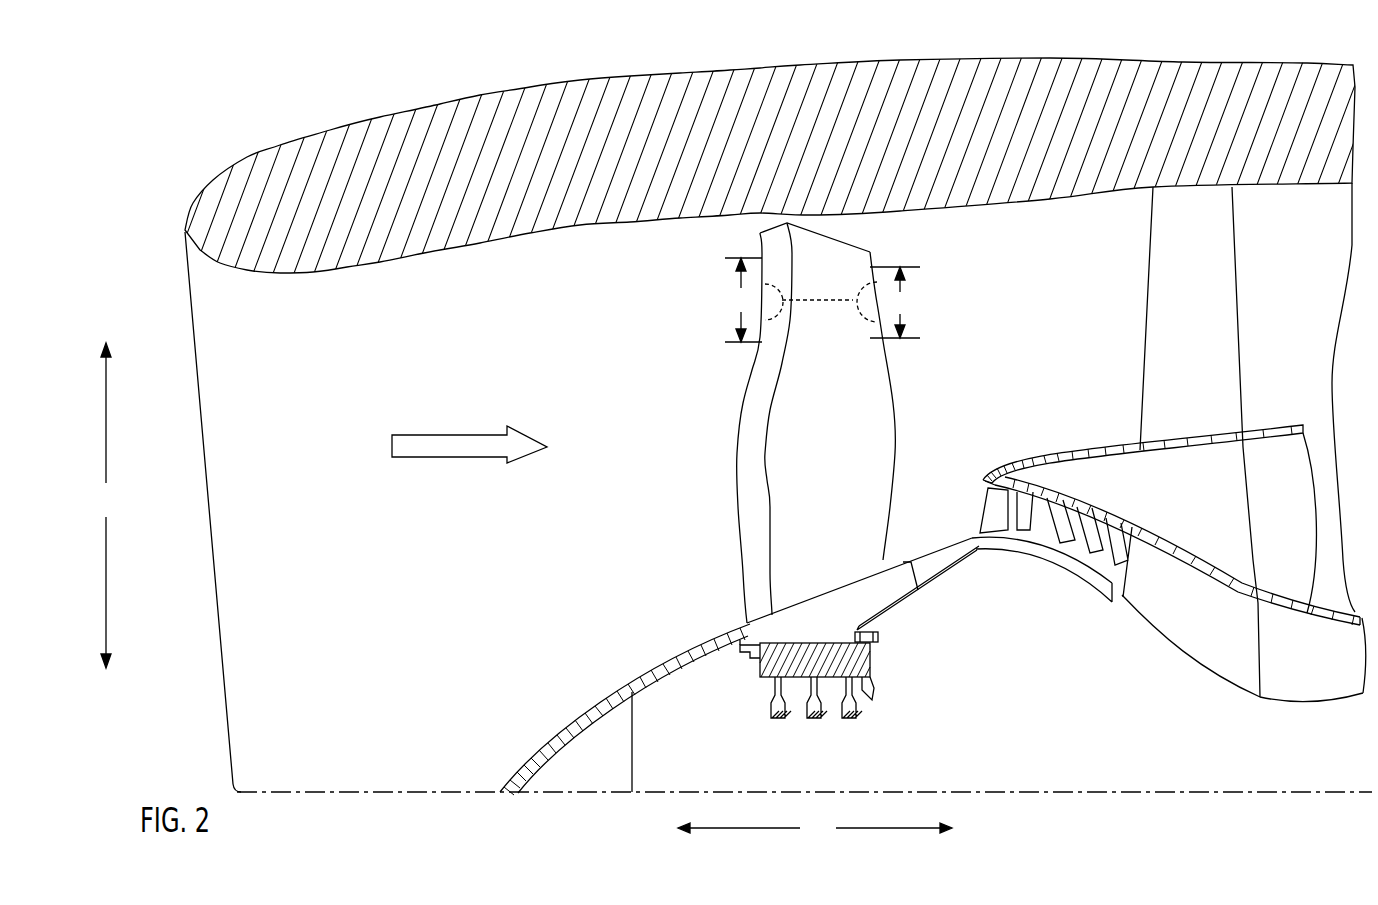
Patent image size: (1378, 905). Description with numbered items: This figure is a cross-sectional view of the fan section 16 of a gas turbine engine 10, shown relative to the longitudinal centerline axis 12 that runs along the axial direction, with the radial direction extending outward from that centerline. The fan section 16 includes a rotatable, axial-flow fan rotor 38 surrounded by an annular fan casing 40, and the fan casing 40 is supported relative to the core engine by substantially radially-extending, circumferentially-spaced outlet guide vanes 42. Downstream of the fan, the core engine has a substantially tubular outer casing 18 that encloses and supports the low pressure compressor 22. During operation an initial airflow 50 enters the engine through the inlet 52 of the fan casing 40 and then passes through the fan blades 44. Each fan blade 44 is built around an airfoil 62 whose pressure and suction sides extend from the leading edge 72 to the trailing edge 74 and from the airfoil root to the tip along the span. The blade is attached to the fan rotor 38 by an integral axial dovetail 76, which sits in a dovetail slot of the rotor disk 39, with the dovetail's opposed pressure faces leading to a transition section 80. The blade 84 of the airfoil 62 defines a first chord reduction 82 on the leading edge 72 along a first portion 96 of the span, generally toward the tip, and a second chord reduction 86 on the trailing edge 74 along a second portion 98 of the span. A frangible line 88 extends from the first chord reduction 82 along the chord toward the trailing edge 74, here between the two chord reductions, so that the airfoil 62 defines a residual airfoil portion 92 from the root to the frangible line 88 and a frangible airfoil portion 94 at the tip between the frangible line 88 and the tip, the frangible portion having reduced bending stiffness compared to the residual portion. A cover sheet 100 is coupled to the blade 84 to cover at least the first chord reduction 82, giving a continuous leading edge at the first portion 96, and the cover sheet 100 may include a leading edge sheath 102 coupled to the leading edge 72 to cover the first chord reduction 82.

The gas turbine engine 10 is at (266, 135).
The centerline axis 12 is at (718, 790).
The fan section 16 is at (795, 325).
The outer casing 18 is at (1102, 450).
The low pressure compressor 22 is at (1033, 561).
The fan rotor 38 is at (739, 670).
The rotor disk 39 is at (770, 710).
The fan casing 40 is at (780, 87).
The outlet guide vanes 42 is at (1240, 318).
The fan blade 44 is at (855, 355).
The airflow 50 is at (433, 458).
The inlet 52 is at (190, 330).
The airfoil 62 is at (752, 432).
The leading edge 72 is at (732, 498).
The trailing edge 74 is at (900, 457).
The axial dovetail 76 is at (760, 630).
The transition section 80 is at (780, 598).
The first chord reduction 82 is at (758, 250).
The blade 84 is at (875, 493).
The second chord reduction 86 is at (878, 253).
The frangible line 88 is at (813, 298).
The residual airfoil portion 92 is at (877, 390).
The frangible airfoil portion 94 is at (810, 232).
The first portion of the span 96 is at (743, 300).
The second portion of the span 98 is at (895, 302).
The cover sheet 100 is at (765, 385).
The leading edge sheath 102 is at (757, 533).